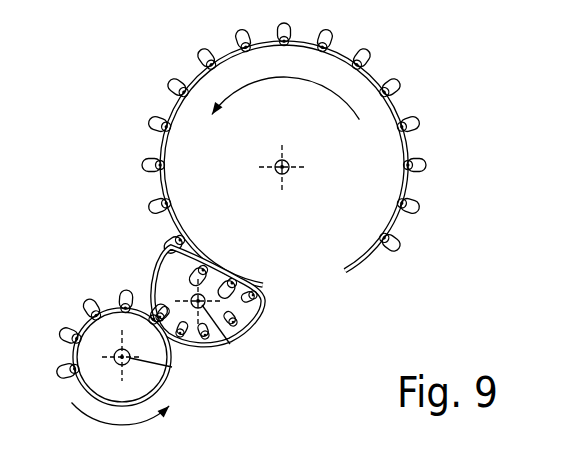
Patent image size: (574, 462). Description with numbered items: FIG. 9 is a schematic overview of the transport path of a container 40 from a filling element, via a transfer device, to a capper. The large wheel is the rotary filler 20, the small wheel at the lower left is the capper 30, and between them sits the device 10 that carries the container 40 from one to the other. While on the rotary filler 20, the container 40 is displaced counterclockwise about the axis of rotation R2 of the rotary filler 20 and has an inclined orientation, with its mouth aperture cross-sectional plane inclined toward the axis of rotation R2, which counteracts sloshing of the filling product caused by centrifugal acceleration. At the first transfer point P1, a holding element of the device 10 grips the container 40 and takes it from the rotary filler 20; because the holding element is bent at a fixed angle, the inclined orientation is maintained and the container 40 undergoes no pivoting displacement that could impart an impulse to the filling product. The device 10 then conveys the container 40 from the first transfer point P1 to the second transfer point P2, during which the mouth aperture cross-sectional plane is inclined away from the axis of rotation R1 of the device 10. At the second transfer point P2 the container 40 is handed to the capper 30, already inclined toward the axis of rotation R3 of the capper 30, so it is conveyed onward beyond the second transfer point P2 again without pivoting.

The device 10 is at (145, 260).
The rotary filler 20 is at (334, 228).
The capper 30 is at (100, 326).
The container 40 is at (397, 252).
The first transfer point P1 is at (221, 268).
The second transfer point P2 is at (168, 331).
The axis of rotation of the device R1 is at (230, 344).
The axis of rotation of the rotary filler R2 is at (285, 163).
The axis of rotation of the capper R3 is at (172, 367).